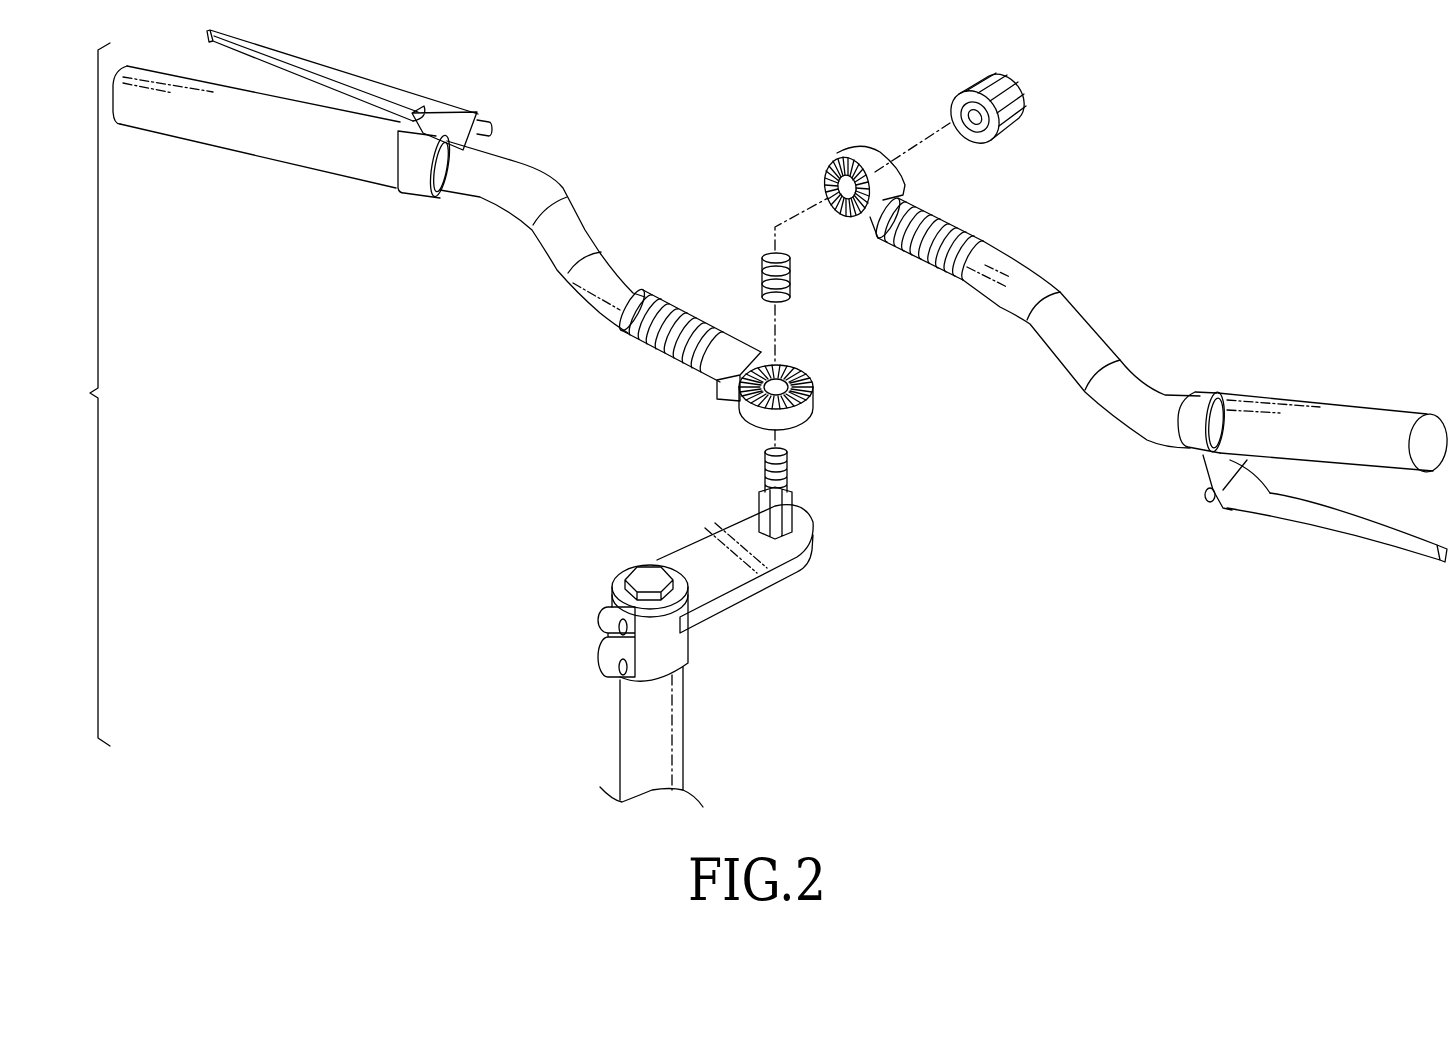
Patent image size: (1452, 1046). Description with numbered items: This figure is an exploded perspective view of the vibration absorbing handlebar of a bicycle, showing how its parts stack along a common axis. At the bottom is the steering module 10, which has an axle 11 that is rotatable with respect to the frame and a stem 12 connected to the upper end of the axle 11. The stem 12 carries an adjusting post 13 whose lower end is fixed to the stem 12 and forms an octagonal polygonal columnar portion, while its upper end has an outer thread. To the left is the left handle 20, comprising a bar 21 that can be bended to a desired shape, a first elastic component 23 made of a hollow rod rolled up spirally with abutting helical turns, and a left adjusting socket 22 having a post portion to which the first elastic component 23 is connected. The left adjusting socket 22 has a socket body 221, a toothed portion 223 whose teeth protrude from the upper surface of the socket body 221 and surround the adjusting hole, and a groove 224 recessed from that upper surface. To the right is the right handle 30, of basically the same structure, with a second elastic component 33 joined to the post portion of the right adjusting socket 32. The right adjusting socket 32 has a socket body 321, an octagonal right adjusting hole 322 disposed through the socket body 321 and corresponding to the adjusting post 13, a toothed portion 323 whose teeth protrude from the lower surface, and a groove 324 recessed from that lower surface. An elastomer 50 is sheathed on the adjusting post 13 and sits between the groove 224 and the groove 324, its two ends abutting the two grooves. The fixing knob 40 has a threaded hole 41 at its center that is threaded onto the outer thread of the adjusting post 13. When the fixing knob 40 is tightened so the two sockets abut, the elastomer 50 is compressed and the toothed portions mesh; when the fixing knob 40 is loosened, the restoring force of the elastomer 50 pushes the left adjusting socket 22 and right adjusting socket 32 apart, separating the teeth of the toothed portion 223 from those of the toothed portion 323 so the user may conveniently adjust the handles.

The steering module 10 is at (727, 663).
The axle 11 is at (627, 728).
The stem 12 is at (688, 557).
The adjusting post 13 is at (792, 502).
The left handle 20 is at (523, 138).
The bar 21 is at (562, 237).
The left adjusting socket 22 is at (728, 415).
The socket body 221 is at (795, 415).
The toothed portion 223 is at (790, 370).
The groove 224 is at (800, 375).
The first elastic component 23 is at (648, 350).
The right handle 30 is at (1098, 300).
The right adjusting socket 32 is at (820, 150).
The socket body 321 is at (842, 153).
The right adjusting hole 322 is at (828, 198).
The toothed portion 323 is at (831, 170).
The groove 324 is at (830, 185).
The second elastic component 33 is at (962, 228).
The fixing knob 40 is at (1018, 108).
The threaded hole 41 is at (965, 116).
The elastomer 50 is at (795, 273).